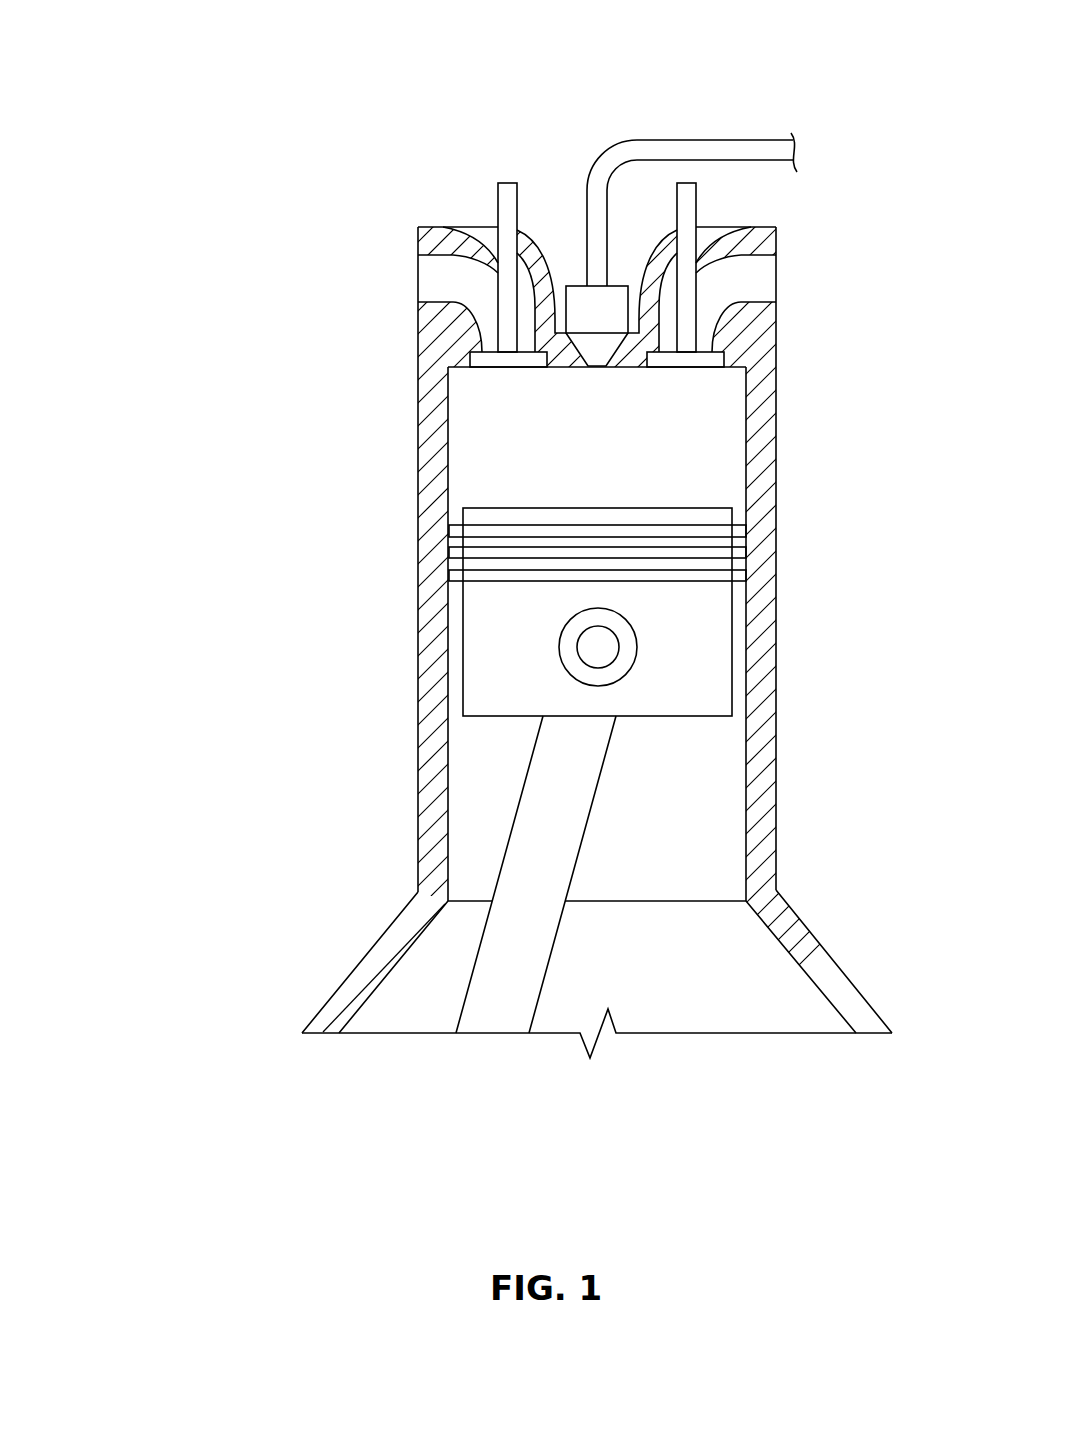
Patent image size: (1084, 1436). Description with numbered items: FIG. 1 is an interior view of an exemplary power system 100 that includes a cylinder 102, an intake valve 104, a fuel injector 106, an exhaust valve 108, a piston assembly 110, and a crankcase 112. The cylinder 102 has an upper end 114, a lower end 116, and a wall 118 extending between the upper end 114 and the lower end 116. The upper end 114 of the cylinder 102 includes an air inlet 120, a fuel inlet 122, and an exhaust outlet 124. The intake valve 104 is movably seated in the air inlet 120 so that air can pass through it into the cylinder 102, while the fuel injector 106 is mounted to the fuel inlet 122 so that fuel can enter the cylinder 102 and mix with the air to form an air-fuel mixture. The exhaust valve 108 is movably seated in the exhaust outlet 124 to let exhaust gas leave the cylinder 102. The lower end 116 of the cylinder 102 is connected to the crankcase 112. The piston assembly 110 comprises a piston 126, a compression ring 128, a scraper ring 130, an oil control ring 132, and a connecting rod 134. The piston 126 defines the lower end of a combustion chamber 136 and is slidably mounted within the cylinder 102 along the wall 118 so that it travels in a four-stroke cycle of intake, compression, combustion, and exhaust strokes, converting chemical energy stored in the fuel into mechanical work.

The power system 100 is at (206, 24).
The cylinder 102 is at (418, 529).
The intake valve 104 is at (470, 362).
The fuel injector 106 is at (563, 283).
The exhaust valve 108 is at (724, 349).
The piston assembly 110 is at (496, 758).
The crankcase 112 is at (430, 978).
The upper end 114 is at (776, 369).
The lower end 116 is at (779, 882).
The wall 118 is at (746, 780).
The air inlet 120 is at (503, 368).
The fuel inlet 122 is at (598, 368).
The exhaust outlet 124 is at (684, 368).
The piston 126 is at (704, 662).
The compression ring 128 is at (747, 531).
The scraper ring 130 is at (747, 553).
The oil control ring 132 is at (747, 576).
The connecting rod 134 is at (576, 869).
The combustion chamber 136 is at (621, 487).